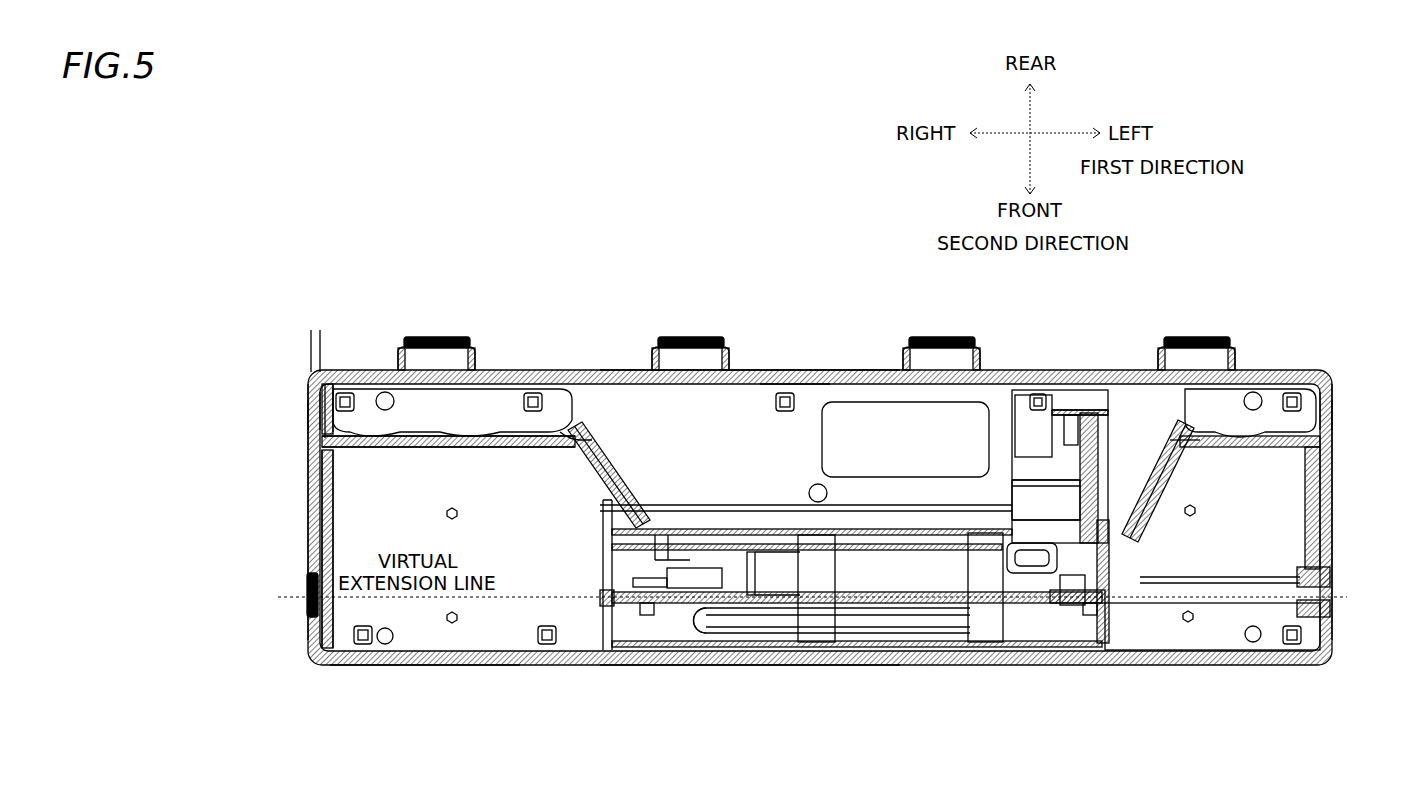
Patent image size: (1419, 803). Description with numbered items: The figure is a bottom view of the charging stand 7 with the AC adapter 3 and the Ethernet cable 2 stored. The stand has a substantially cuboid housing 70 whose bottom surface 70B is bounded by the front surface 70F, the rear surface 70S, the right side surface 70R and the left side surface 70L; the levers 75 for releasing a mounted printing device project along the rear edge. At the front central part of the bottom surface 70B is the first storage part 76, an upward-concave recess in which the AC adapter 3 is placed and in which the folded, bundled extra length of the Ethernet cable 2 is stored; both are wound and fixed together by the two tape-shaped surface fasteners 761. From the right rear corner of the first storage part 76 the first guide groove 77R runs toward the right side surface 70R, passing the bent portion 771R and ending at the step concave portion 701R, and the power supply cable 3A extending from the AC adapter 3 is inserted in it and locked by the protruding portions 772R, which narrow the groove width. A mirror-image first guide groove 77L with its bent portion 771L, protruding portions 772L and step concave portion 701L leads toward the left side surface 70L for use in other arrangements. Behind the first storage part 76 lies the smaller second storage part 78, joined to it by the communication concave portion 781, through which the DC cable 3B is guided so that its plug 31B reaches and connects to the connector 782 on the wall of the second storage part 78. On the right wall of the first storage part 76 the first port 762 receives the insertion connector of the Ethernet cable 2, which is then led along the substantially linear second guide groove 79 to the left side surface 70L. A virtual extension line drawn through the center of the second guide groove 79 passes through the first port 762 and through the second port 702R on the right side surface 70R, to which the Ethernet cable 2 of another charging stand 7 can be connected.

The Ethernet cable 2 is at (1340, 600).
The AC adapter 3 is at (935, 580).
The power supply cable 3A is at (307, 358).
The DC cable 3B is at (1070, 578).
The charging stand 7 is at (410, 688).
The plug 31B is at (1072, 407).
The housing 70 is at (312, 672).
The bottom surface 70B is at (742, 382).
The front surface 70F is at (692, 668).
The left side surface 70L is at (1334, 520).
The right side surface 70R is at (306, 528).
The rear surface 70S is at (790, 382).
The step concave portion 701L is at (1322, 430).
The step concave portion 701R is at (318, 432).
The second port 702R is at (302, 605).
The lever 75 is at (1207, 334).
The first storage part 76 is at (683, 627).
The surface fastener 761 is at (950, 543).
The first port 762 is at (600, 572).
The first guide groove 77L is at (1215, 418).
The first guide groove 77R is at (615, 385).
The bent portion 771L is at (1167, 438).
The bent portion 771R is at (586, 420).
The protruding portion 772L is at (1180, 483).
The protruding portion 772R is at (590, 480).
The second storage part 78 is at (1063, 390).
The communication concave portion 781 is at (1012, 500).
The connector 782 is at (1105, 425).
The second guide groove 79 is at (1145, 605).